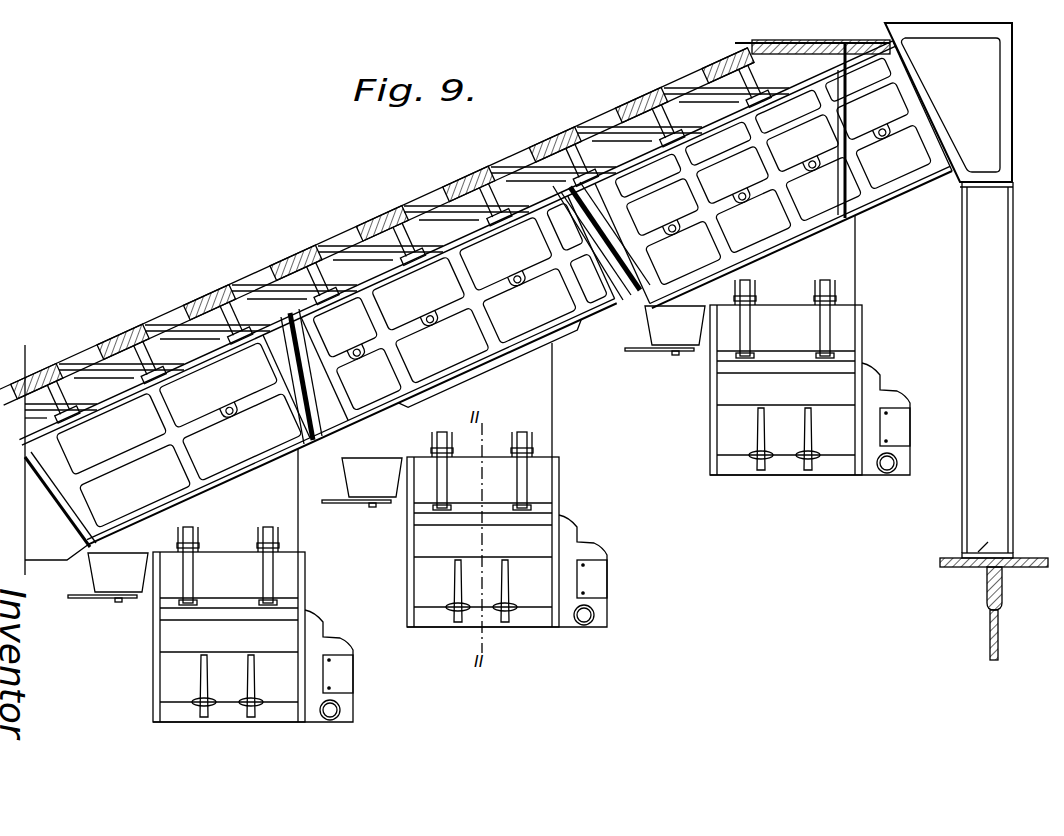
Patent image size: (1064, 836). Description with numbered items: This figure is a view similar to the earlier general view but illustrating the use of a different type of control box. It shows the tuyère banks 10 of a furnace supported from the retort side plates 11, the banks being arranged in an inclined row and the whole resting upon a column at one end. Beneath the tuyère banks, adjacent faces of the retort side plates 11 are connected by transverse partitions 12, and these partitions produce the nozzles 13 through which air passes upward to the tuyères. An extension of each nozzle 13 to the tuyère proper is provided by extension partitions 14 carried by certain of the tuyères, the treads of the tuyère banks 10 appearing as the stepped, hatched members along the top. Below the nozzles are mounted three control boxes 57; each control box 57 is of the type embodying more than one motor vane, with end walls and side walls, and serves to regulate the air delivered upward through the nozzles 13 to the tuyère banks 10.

The tuyère banks 10 is at (515, 371).
The retort side plates 11 is at (496, 337).
The transverse partitions 12 is at (845, 142).
The nozzles 13 is at (509, 364).
The extension partitions 14 is at (495, 166).
The control box 57 is at (230, 693).